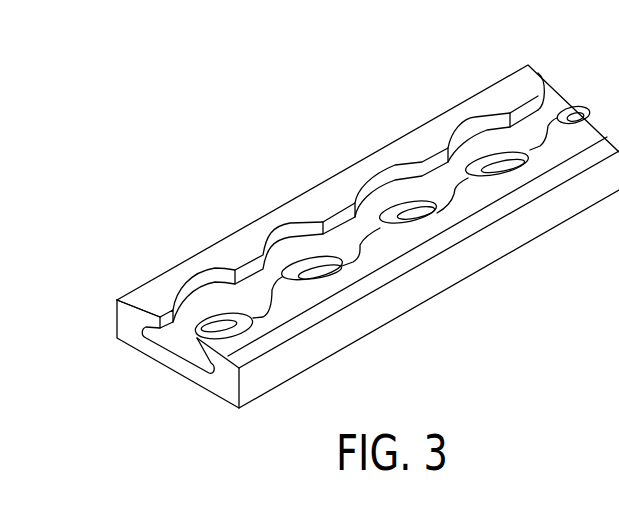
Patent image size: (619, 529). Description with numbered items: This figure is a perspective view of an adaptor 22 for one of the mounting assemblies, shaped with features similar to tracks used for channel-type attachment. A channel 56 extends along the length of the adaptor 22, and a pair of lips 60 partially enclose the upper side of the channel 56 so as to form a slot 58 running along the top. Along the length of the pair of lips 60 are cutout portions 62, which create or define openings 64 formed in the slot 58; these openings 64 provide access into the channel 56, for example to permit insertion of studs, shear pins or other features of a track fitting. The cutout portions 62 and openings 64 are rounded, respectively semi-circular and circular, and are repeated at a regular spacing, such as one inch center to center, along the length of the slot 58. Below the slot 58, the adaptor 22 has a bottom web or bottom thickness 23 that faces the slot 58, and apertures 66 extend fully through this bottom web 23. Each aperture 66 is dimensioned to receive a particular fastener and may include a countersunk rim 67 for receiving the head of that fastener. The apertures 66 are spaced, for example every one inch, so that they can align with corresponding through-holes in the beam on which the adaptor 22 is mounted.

The adaptor 22 is at (508, 257).
The bottom web 23 is at (196, 376).
The channel 56 is at (175, 345).
The slot 58 is at (182, 327).
The pair of lips 60 is at (160, 290).
The cutout portions 62 is at (290, 230).
The openings 64 is at (322, 227).
The apertures 66 is at (400, 207).
The countersunk rim 67 is at (425, 205).